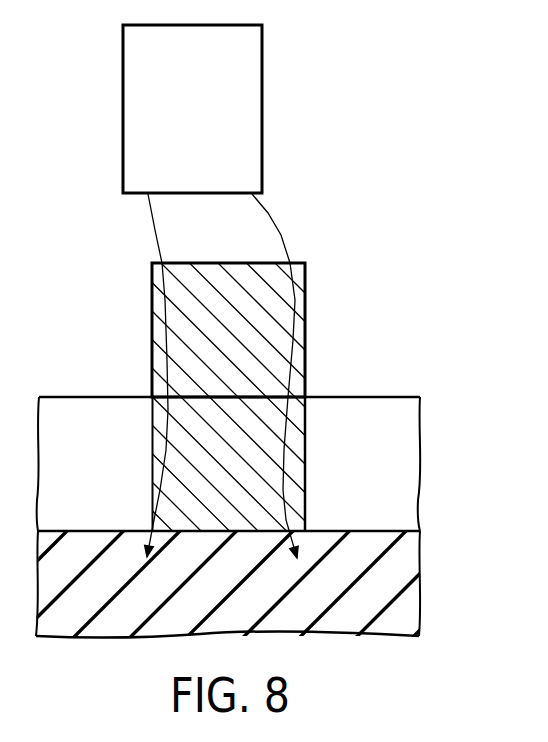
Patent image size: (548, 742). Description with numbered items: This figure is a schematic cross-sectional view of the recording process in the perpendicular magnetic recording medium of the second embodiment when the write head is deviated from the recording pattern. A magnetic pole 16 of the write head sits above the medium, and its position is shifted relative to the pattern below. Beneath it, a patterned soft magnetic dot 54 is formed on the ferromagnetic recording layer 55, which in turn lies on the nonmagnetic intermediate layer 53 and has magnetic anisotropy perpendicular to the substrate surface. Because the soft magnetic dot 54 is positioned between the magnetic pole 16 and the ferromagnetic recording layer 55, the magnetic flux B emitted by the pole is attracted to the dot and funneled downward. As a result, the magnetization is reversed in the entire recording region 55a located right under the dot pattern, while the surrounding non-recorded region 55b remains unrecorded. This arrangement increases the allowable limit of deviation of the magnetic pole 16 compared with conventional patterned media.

The magnetic pole 16 is at (251, 97).
The magnetic flux B is at (273, 227).
The soft magnetic dot 54 is at (295, 325).
The recording region 55a is at (187, 437).
The non-recorded region 55b is at (412, 418).
The ferromagnetic recording layer 55 is at (397, 490).
The nonmagnetic intermediate layer 53 is at (410, 607).